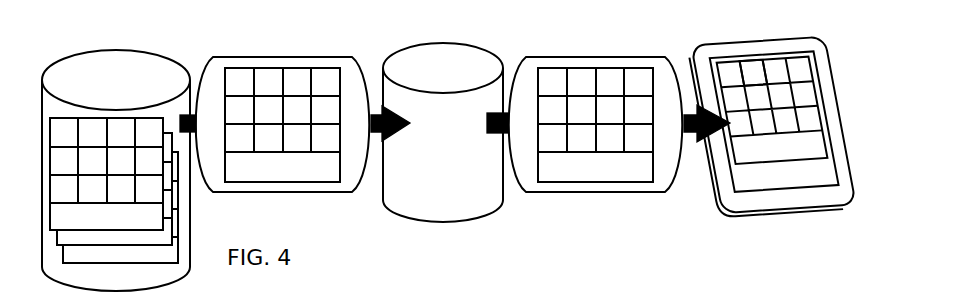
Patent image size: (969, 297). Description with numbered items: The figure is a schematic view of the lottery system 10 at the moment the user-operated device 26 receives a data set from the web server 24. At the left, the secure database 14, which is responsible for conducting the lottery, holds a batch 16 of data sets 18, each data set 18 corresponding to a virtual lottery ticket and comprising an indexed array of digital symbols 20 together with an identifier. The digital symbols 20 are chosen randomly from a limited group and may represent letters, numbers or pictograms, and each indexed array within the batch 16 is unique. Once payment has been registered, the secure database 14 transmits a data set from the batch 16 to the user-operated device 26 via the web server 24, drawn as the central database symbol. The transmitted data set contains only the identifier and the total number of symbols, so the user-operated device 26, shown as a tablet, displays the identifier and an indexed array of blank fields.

The lottery system 10 is at (451, 153).
The secure database 14 is at (185, 68).
The batch 16 is at (141, 139).
The data set 18 is at (144, 122).
The digital symbols 20 is at (133, 81).
The web server 24 is at (497, 57).
The user-operated device 26 is at (774, 129).